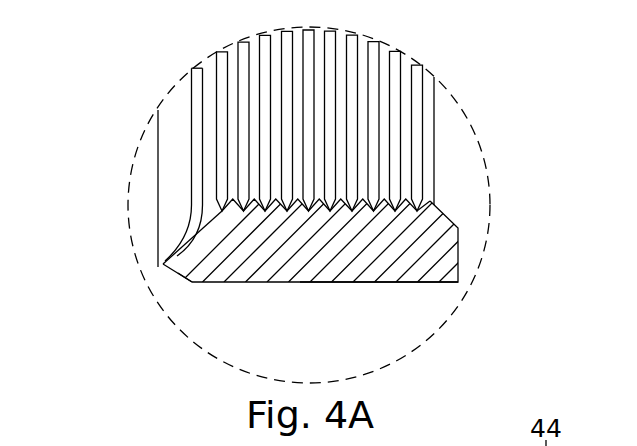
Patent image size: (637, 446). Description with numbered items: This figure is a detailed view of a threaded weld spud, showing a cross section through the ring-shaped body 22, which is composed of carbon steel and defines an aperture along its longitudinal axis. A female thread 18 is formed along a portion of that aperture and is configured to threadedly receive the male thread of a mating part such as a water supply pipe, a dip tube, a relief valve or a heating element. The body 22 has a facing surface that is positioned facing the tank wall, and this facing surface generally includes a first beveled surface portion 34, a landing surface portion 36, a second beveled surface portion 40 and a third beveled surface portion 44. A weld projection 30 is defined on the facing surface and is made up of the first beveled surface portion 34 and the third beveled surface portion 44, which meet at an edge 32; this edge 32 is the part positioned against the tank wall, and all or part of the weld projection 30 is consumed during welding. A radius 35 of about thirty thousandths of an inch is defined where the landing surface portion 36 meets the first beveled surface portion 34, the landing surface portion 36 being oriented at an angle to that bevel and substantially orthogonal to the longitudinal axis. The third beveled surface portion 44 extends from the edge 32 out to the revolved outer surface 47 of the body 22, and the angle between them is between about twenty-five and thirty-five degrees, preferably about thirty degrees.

The female thread 18 is at (408, 210).
The body 22 is at (443, 247).
The weld projection 30 is at (186, 250).
The edge 32 is at (160, 266).
The first beveled surface portion 34 is at (176, 260).
The radius 35 is at (158, 195).
The landing surface portion 36 is at (162, 263).
The second beveled surface portion 40 is at (203, 86).
The third beveled surface portion 44 is at (176, 276).
The revolved outer surface 47 is at (408, 282).